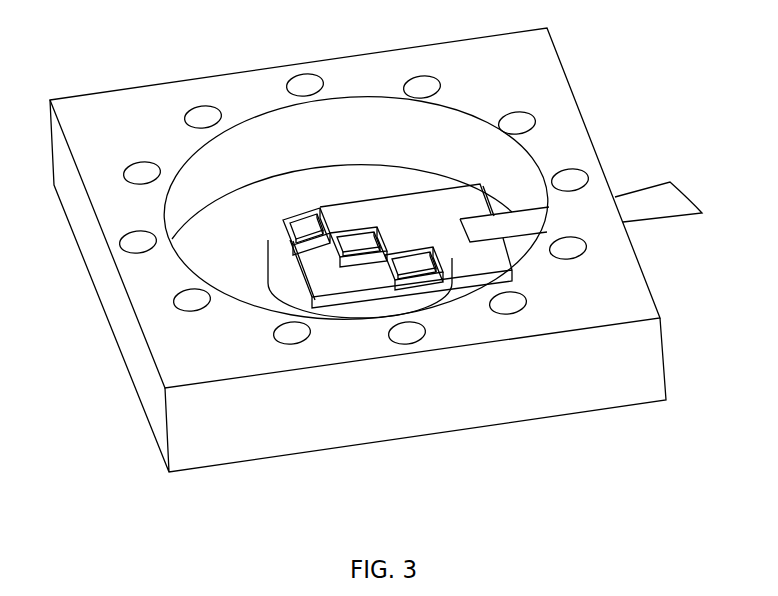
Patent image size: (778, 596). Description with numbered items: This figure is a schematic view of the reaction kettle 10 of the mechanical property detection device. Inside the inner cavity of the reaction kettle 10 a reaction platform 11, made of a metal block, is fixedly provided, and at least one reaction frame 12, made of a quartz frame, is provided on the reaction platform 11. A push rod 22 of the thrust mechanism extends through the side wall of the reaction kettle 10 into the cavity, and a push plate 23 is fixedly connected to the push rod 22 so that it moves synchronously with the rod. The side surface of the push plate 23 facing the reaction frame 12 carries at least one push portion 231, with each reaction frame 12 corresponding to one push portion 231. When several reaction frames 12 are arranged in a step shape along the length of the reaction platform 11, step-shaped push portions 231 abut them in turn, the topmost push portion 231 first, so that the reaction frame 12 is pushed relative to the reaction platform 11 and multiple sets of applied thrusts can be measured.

The reaction kettle 10 is at (107, 86).
The reaction platform 11 is at (330, 276).
The reaction frame 12 is at (296, 217).
The push rod 22 is at (630, 208).
The push plate 23 is at (462, 186).
The push portion 231 is at (434, 286).